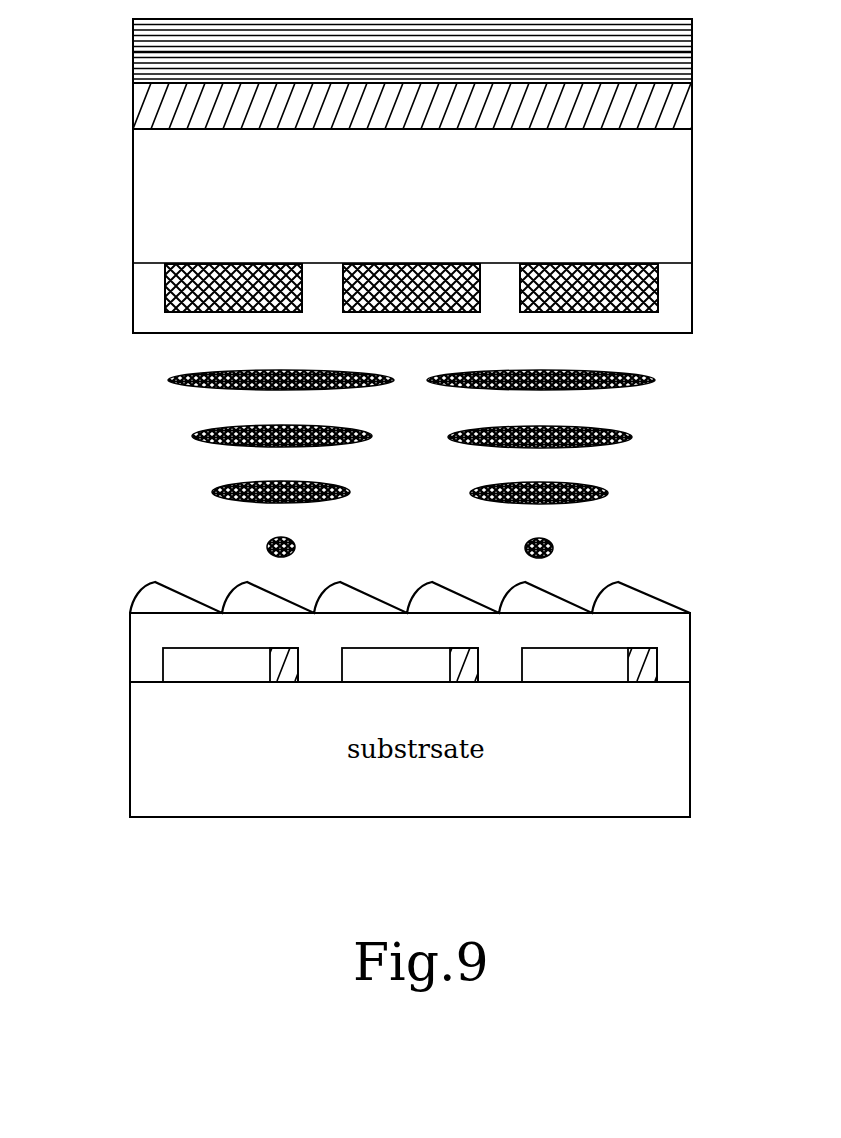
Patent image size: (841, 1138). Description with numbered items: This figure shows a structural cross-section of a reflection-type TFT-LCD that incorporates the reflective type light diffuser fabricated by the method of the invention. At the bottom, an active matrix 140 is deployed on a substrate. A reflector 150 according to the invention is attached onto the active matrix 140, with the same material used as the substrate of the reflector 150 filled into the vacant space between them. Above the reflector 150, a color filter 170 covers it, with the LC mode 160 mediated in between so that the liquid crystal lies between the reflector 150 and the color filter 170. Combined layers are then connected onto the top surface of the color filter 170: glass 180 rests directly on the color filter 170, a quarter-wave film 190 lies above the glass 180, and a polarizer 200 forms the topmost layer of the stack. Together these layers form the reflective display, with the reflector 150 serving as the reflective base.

The active matrix 140 is at (163, 669).
The reflector 150 is at (130, 605).
The LC mode 160 is at (135, 442).
The color filter 170 is at (165, 293).
The glass 180 is at (133, 193).
The λ/4 film 190 is at (133, 106).
The polarizer 200 is at (133, 51).